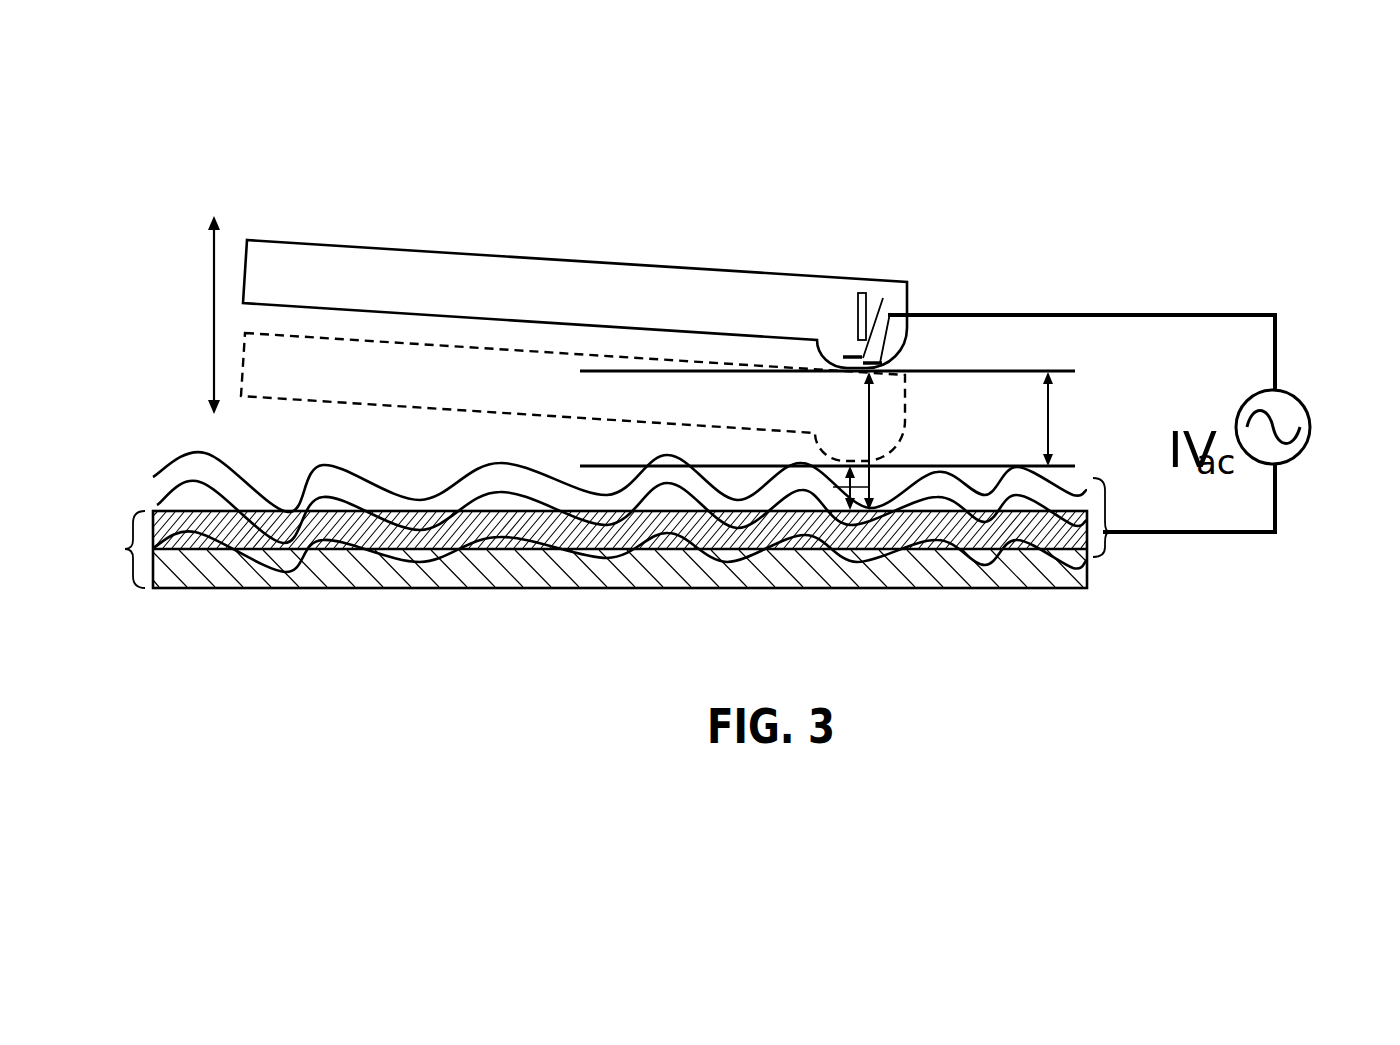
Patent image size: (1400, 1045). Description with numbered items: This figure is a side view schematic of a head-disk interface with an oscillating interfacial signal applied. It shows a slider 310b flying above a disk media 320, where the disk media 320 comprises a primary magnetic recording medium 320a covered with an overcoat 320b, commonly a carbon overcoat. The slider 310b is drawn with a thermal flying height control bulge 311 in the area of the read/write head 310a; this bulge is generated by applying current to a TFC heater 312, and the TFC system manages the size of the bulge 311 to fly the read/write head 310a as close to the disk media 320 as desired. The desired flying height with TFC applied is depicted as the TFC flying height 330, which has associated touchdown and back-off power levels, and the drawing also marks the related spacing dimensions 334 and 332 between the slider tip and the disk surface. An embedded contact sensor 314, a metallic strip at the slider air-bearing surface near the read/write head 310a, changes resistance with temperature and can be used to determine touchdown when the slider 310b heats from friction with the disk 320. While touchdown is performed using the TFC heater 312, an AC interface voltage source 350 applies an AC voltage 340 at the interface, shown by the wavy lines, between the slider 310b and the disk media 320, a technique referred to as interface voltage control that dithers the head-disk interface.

The slider 310b is at (447, 277).
The TFC heater 312 is at (857, 308).
The read/write head 310a is at (883, 298).
The embedded contact sensor 314 is at (890, 347).
The TFC bulge 311 is at (912, 353).
The TFC flying height 330 is at (866, 420).
The gap height 334 is at (1055, 408).
The surface clearance 332 is at (833, 487).
The AC interface voltage source 350 is at (1312, 413).
The AC voltage 340 is at (1120, 518).
The disk media 320 is at (584, 558).
The primary magnetic recording medium 320a is at (198, 573).
The overcoat 320b is at (168, 522).